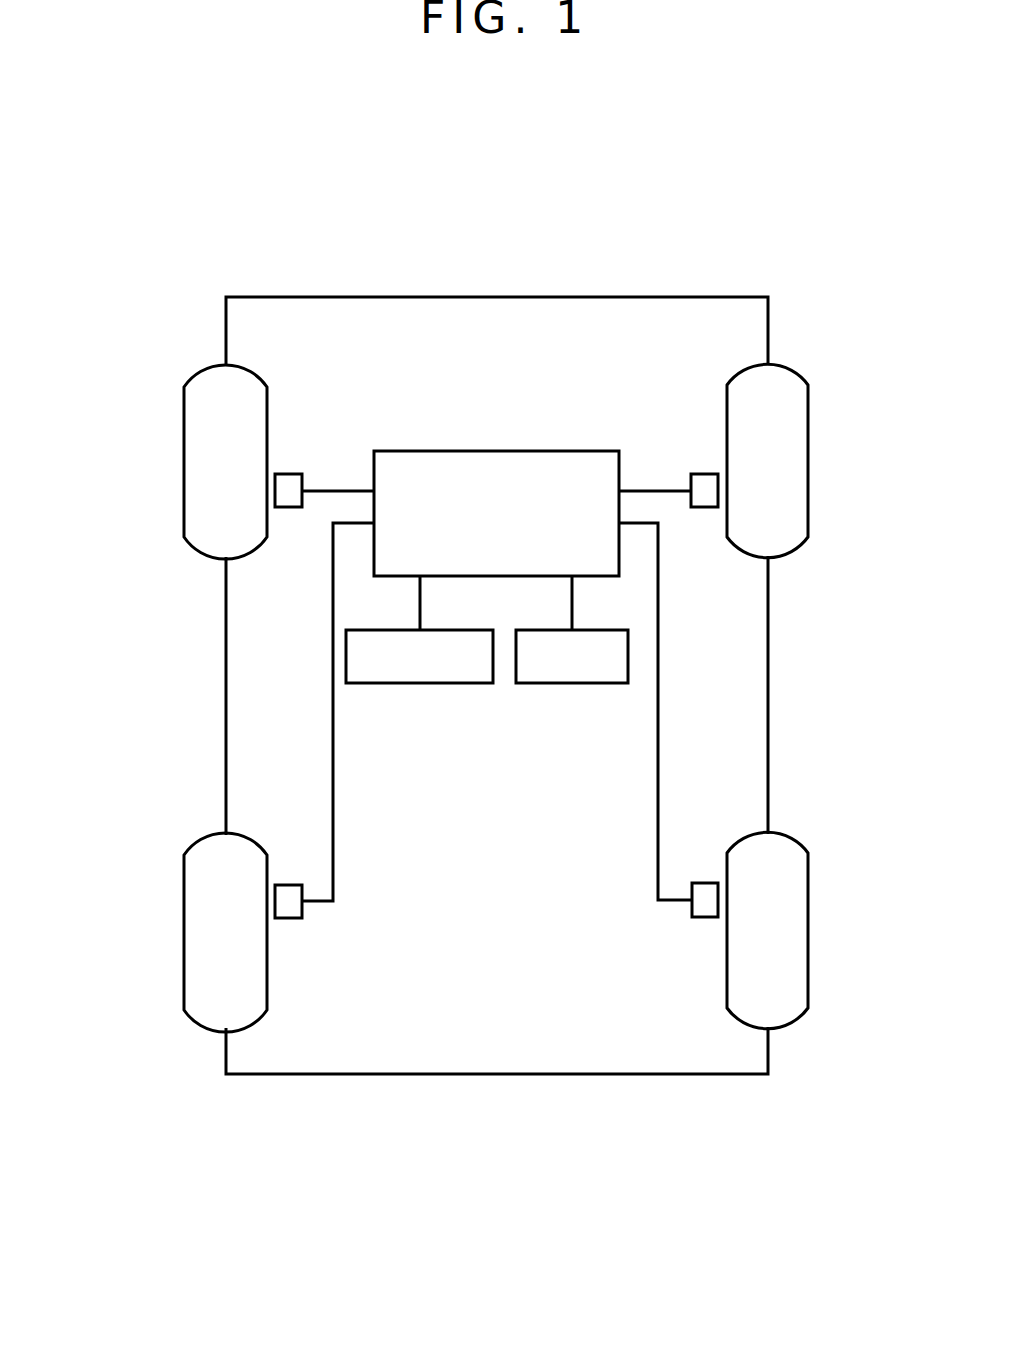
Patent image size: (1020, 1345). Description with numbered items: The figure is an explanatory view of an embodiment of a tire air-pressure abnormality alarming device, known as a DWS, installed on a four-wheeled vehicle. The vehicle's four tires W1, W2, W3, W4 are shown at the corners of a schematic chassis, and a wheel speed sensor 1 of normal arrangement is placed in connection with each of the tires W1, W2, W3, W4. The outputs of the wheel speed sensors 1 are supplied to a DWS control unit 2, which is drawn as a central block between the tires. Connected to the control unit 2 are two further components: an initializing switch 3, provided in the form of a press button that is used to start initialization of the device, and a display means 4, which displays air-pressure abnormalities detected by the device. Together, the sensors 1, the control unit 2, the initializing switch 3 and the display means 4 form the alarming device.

The wheel speed sensor 1 is at (285, 483).
The DWS control unit 2 is at (492, 468).
The initializing switch 3 is at (422, 672).
The display means 4 is at (558, 672).
The tire W1 is at (184, 440).
The tire W2 is at (808, 418).
The tire W3 is at (184, 902).
The tire W4 is at (808, 890).